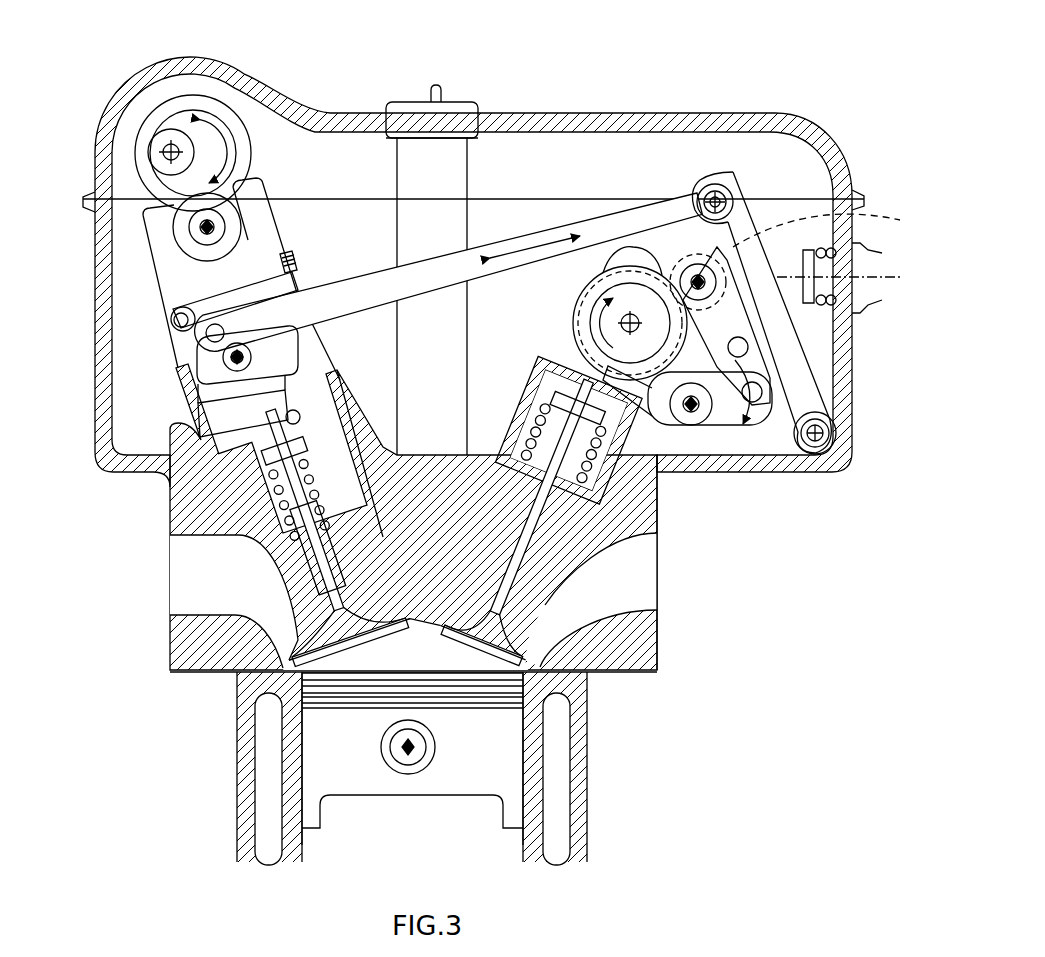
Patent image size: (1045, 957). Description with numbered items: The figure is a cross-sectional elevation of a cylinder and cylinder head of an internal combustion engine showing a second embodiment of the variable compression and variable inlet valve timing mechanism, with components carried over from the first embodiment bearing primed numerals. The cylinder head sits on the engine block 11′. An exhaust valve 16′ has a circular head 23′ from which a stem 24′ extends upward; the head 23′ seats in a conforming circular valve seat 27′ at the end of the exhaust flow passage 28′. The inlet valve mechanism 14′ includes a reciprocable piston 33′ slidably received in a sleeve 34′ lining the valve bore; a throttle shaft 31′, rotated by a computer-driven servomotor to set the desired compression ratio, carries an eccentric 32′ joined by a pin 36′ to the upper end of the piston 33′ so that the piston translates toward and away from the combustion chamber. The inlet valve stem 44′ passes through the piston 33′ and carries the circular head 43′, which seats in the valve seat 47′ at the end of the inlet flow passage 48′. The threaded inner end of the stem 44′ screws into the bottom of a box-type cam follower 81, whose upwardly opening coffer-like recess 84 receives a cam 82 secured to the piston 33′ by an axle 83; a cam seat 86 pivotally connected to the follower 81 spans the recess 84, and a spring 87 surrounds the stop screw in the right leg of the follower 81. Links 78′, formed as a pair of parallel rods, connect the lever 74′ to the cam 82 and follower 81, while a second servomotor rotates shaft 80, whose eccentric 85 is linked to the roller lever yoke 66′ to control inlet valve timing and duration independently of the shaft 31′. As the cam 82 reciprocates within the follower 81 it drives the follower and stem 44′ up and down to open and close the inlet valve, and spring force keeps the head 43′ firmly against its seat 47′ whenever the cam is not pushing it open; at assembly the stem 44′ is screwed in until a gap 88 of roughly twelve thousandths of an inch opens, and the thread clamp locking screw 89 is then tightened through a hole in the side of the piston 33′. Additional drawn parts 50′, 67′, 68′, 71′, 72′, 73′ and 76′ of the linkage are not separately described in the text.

The engine block 11′ is at (588, 723).
The inlet valve mechanism 14′ is at (220, 498).
The exhaust valve 16′ is at (658, 480).
The circular head 23′ is at (476, 664).
The stem 24′ is at (586, 518).
The circular valve seat 27′ is at (524, 657).
The exhaust flow passage 28′ is at (640, 572).
The throttle shaft 31′ is at (153, 137).
The eccentric 32′ is at (222, 108).
The piston 33′ is at (270, 199).
The sleeve 34′ is at (168, 485).
The pin 36′ is at (190, 230).
The circular head 43′ is at (250, 606).
The inlet valve stem 44′ is at (300, 540).
The valve seat 47′ is at (300, 653).
The inlet flow passage 48′ is at (200, 592).
The rocker housing 50′ is at (257, 243).
The roller lever yoke 66′ is at (736, 440).
The cam 67′ is at (612, 312).
The intake rocker arm 68′ is at (765, 442).
The motion arc 71′ is at (902, 219).
The pivot 72′ is at (627, 248).
The lever pivot 73′ is at (755, 263).
The lever 74′ is at (812, 355).
The lower pivot 76′ is at (843, 447).
The link 78′ is at (523, 238).
The shaft 80 is at (698, 456).
The box-type cam follower 81 is at (198, 420).
The cam 82 is at (198, 382).
The axle 83 is at (212, 357).
The coffer-like recess 84 is at (283, 340).
The eccentric 85 is at (808, 468).
The cam seat 86 is at (174, 317).
The spring 87 is at (296, 268).
The gap 88 is at (380, 262).
The thread clamp locking screw 89 is at (345, 383).